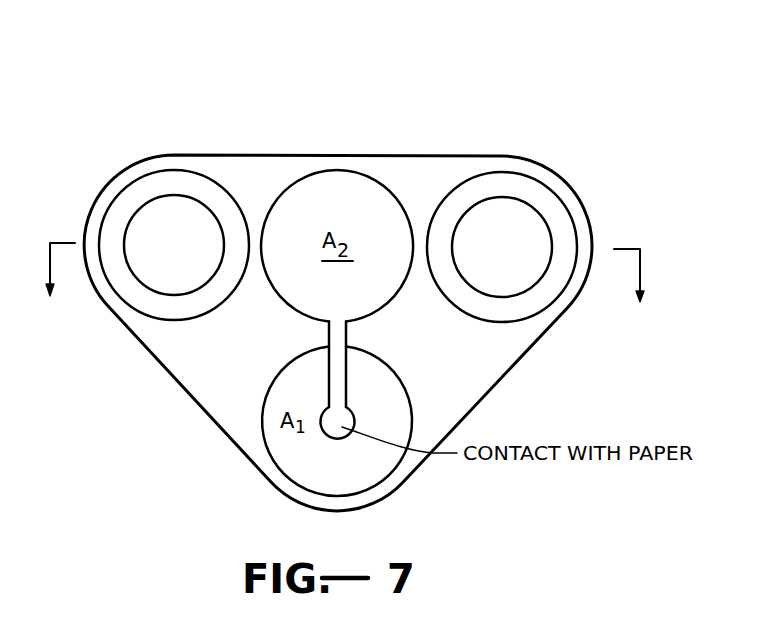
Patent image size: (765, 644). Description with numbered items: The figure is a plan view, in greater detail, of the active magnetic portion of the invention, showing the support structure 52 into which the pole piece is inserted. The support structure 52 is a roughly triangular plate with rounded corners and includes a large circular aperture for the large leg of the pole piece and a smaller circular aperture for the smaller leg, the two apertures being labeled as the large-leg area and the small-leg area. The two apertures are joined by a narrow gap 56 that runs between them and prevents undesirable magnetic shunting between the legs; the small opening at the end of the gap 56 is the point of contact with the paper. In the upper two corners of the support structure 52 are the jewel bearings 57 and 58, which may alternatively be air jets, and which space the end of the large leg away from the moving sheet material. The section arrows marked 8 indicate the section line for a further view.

The support structure 52 is at (202, 393).
The gap 56 is at (347, 337).
The jewel bearing 57 is at (187, 250).
The jewel bearing 58 is at (442, 113).
The section line 8- 8 is at (347, 287).